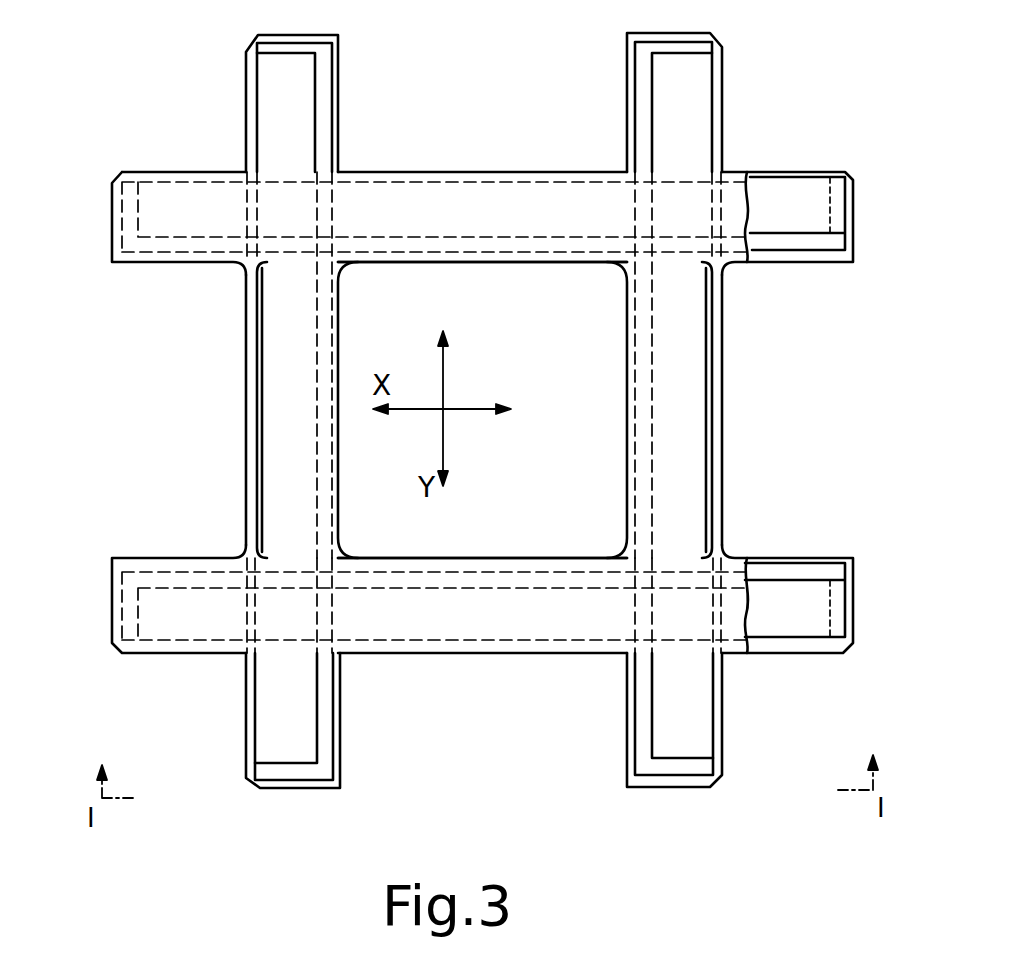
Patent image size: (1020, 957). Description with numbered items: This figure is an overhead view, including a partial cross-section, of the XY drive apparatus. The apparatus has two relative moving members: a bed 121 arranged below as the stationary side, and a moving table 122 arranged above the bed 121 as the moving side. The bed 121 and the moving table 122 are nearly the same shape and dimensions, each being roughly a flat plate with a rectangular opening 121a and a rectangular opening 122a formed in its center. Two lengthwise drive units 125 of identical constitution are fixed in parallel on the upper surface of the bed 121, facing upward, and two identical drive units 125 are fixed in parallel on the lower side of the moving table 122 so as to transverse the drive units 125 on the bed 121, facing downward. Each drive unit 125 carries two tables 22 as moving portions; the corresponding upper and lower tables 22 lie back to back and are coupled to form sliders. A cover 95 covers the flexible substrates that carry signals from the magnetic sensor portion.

The table 22 is at (282, 195).
The cover 95 is at (797, 242).
The bed 121 is at (470, 660).
The rectangular opening 121a is at (498, 558).
The moving table 122 is at (450, 165).
The rectangular opening 122a is at (532, 262).
The drive unit 125 is at (824, 165).